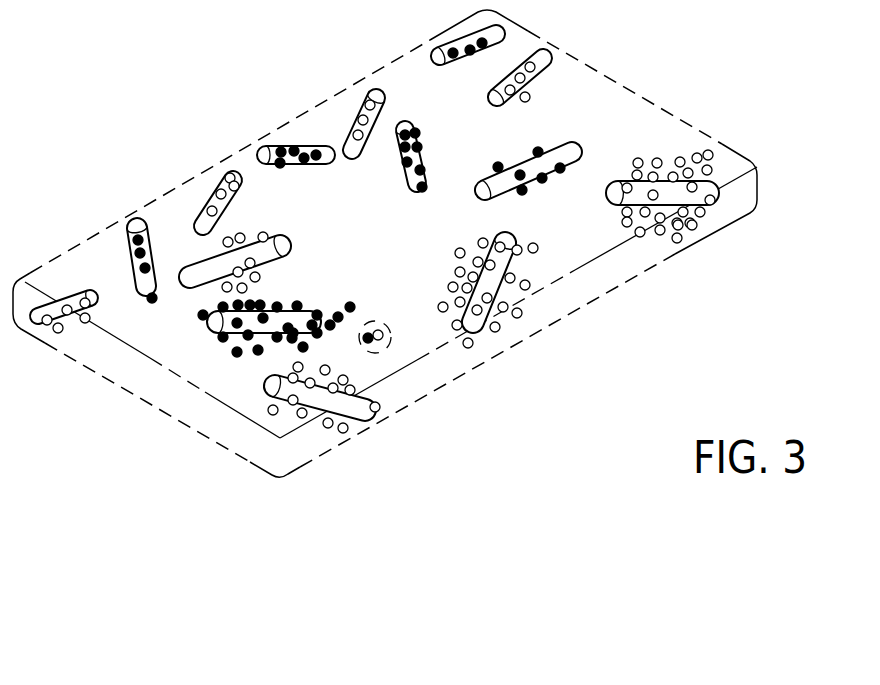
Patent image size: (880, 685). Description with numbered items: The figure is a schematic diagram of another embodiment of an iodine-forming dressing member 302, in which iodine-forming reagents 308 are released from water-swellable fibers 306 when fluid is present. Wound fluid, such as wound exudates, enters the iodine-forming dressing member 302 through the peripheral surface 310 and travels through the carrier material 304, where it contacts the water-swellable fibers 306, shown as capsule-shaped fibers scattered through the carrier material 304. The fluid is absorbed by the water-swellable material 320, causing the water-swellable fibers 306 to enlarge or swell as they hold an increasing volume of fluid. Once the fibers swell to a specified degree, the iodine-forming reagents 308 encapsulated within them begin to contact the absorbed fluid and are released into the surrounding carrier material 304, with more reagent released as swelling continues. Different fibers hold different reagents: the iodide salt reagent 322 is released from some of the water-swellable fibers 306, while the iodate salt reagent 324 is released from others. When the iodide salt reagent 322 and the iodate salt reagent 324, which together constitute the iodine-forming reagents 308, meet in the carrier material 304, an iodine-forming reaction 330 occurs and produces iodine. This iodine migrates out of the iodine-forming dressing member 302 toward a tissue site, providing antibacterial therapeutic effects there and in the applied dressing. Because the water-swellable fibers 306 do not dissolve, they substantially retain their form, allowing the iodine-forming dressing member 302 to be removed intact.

The iodine-forming dressing member 302 is at (138, 84).
The carrier material 304 is at (657, 253).
The water-swellable fibers 306 is at (126, 236).
The iodine-forming reagents 308 is at (707, 152).
The peripheral surface 310 is at (567, 317).
The water-swellable material 320 is at (207, 323).
The iodide salt reagent 322 is at (280, 432).
The iodate salt reagent 324 is at (537, 143).
The iodine-forming reaction 330 is at (390, 327).